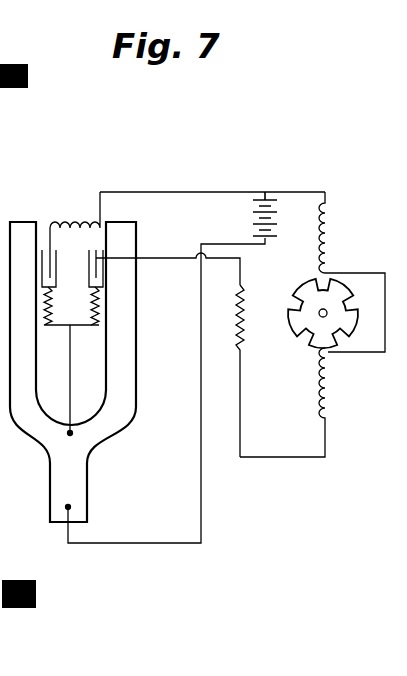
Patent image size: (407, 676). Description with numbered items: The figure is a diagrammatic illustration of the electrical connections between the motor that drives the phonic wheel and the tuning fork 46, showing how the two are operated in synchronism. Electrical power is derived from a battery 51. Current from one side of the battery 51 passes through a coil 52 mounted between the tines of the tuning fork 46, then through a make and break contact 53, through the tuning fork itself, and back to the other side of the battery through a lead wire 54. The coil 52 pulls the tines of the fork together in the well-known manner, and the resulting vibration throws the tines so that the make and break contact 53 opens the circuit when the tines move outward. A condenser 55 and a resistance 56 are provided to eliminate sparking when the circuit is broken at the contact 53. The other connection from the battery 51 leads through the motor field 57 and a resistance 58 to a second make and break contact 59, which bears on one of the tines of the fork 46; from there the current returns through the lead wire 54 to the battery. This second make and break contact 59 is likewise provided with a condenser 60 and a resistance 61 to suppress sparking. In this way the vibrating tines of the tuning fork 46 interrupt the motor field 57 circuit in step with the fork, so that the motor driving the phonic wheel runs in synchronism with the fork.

The tuning fork 46 is at (33, 428).
The battery 51 is at (253, 212).
The coil 52 is at (82, 226).
The make and break contact 53 is at (42, 249).
The lead wire 54 is at (201, 519).
The condenser 55 is at (53, 280).
The resistance 56 is at (51, 312).
The motor field 57 is at (332, 237).
The resistance 58 is at (245, 333).
The second make and break contact 59 is at (104, 251).
The condenser 60 is at (89, 280).
The resistance 61 is at (92, 310).